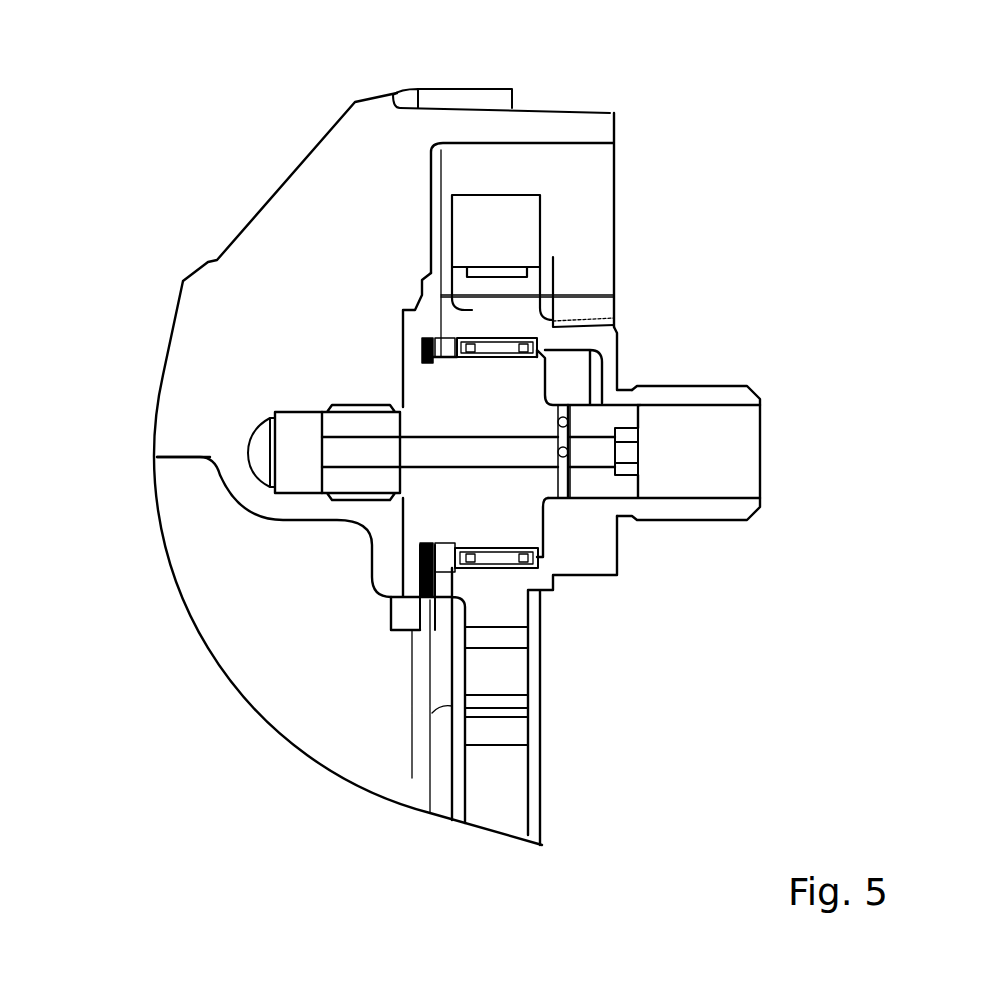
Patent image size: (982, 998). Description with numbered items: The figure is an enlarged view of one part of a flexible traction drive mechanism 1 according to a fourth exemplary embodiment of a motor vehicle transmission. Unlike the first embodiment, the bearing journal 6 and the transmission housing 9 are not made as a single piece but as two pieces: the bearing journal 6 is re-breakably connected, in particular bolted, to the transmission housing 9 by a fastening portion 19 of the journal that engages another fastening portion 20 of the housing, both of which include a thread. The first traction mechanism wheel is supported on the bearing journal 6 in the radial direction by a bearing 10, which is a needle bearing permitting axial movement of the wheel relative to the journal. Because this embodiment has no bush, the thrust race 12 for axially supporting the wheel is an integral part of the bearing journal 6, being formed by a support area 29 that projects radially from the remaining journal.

The flexible traction drive mechanism 1 is at (460, 189).
The bearing journal 6 is at (513, 512).
The transmission housing 9 is at (337, 233).
The bearing 10 is at (490, 557).
The thrust race 12 is at (430, 310).
The fastening portion 19 is at (380, 483).
The other fastening portion 20 is at (340, 405).
The support area 29 is at (400, 330).